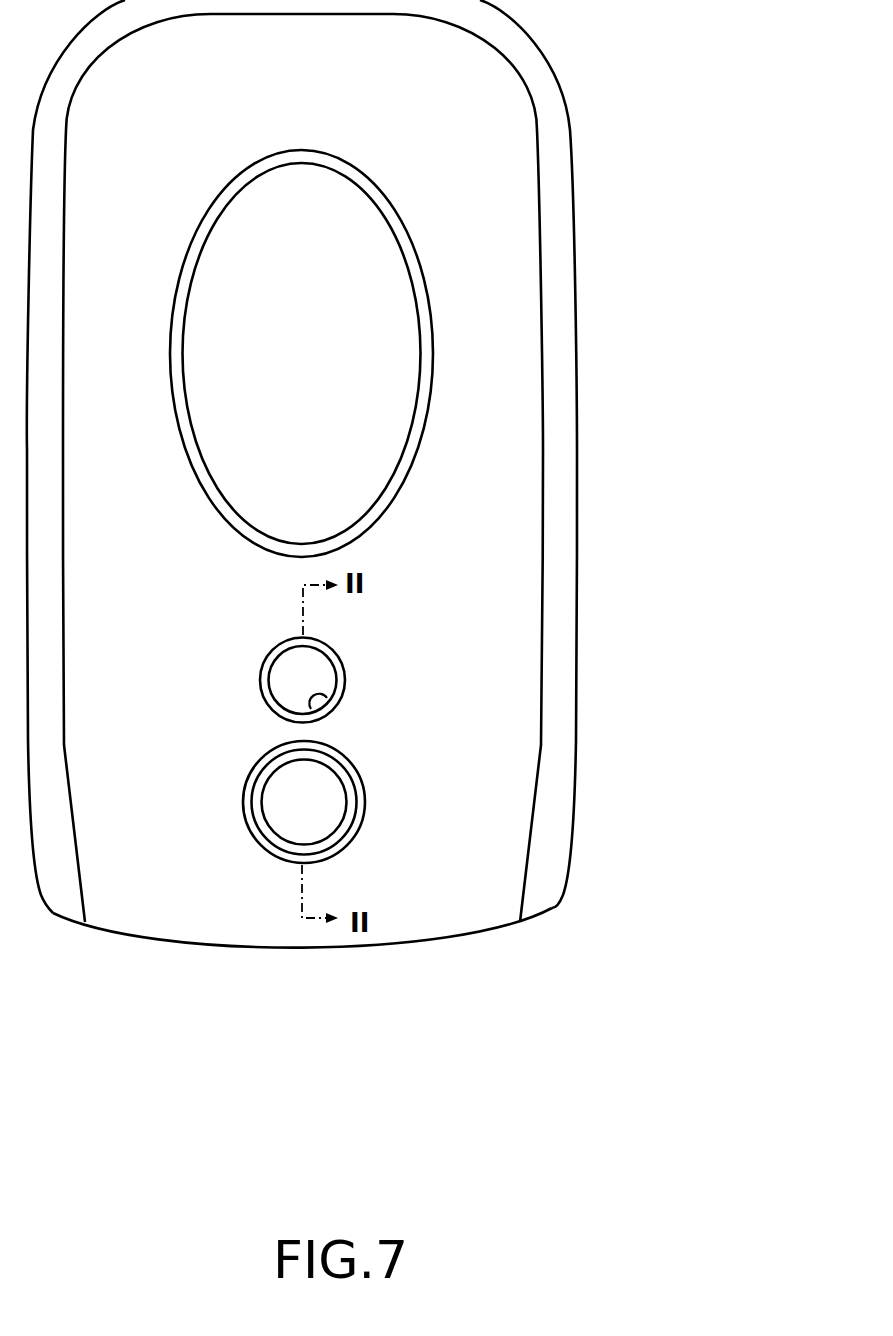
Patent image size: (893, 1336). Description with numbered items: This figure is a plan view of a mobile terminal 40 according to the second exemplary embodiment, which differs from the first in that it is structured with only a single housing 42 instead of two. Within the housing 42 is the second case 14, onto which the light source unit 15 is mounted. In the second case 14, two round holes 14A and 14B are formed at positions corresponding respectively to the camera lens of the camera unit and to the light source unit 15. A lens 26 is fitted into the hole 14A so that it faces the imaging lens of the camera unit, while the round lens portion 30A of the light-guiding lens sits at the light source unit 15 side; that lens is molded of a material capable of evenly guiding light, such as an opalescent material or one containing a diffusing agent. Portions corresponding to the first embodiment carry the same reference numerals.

The mobile terminal 40 is at (473, 983).
The single housing 42 is at (580, 342).
The second case 14 is at (552, 870).
The round hole 14A is at (240, 814).
The round hole 14B is at (327, 700).
The light source unit 15 is at (333, 645).
The lens 26 is at (330, 802).
The round lens portion 30A is at (327, 683).